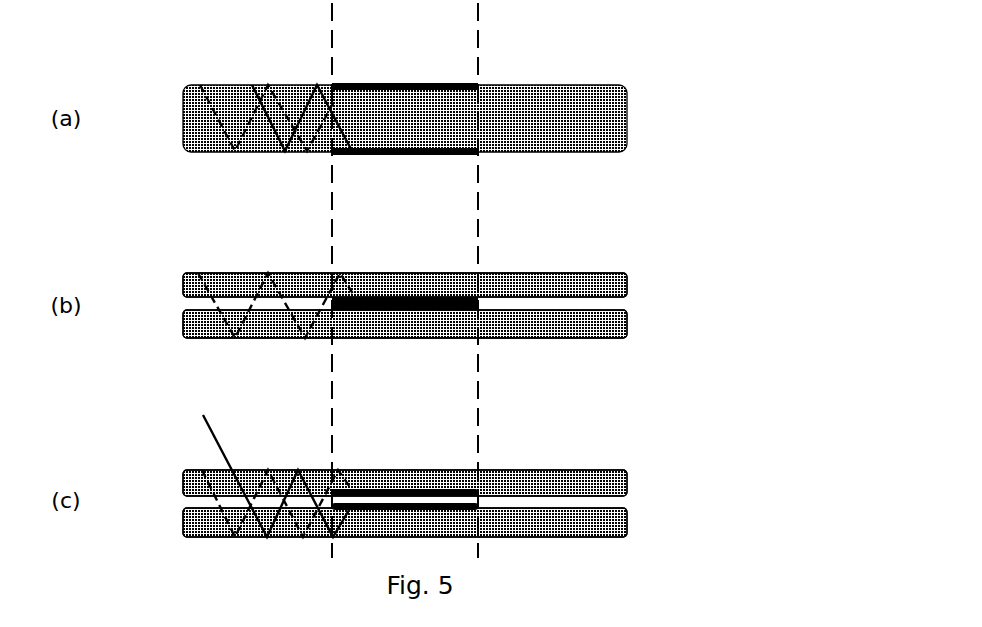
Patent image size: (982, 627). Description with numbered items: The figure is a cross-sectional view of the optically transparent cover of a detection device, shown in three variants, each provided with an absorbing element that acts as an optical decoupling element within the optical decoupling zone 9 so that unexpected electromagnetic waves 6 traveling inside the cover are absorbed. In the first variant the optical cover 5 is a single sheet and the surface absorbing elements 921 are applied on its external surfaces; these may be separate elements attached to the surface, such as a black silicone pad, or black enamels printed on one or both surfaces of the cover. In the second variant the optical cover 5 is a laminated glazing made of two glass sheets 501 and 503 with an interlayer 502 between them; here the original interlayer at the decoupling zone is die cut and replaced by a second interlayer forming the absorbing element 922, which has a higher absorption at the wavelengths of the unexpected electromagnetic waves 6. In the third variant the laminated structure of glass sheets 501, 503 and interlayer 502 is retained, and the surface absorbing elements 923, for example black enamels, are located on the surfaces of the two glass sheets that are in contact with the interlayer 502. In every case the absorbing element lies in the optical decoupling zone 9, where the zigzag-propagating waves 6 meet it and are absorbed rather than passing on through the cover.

The optical cover 5 is at (627, 118).
The glass sheet 501 is at (620, 282).
The interlayer 502 is at (620, 304).
The glass sheet 503 is at (620, 329).
The unexpected electromagnetic waves 6 is at (274, 131).
The optical decoupling zone 9 is at (453, 33).
The absorbing element 921 is at (426, 148).
The absorbing element 922 is at (413, 297).
The surface absorbing elements 923 is at (415, 503).